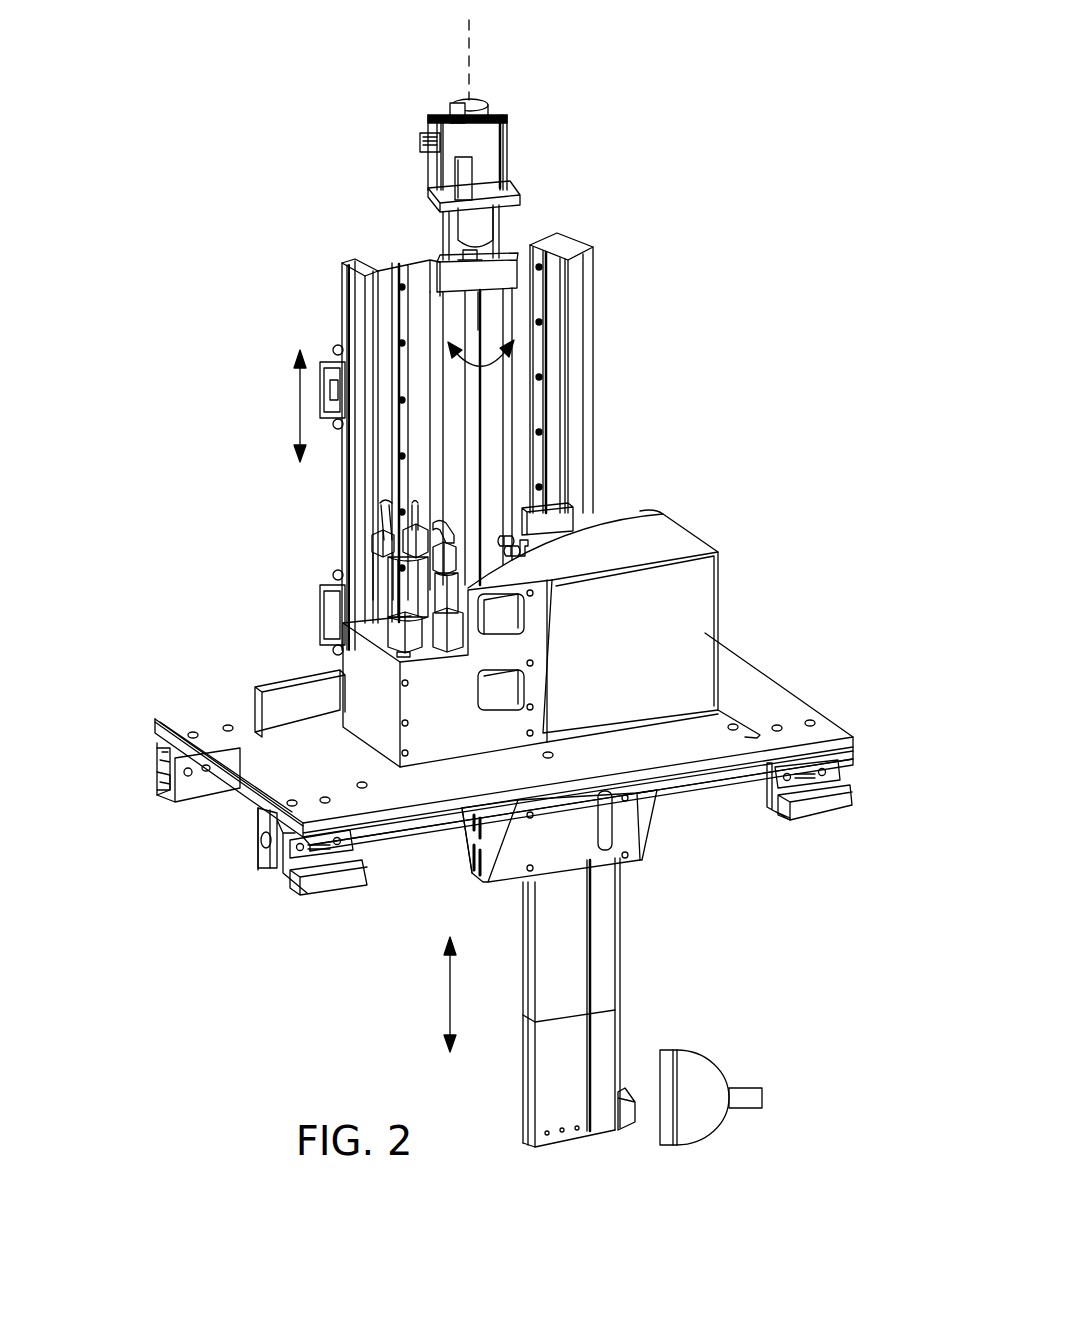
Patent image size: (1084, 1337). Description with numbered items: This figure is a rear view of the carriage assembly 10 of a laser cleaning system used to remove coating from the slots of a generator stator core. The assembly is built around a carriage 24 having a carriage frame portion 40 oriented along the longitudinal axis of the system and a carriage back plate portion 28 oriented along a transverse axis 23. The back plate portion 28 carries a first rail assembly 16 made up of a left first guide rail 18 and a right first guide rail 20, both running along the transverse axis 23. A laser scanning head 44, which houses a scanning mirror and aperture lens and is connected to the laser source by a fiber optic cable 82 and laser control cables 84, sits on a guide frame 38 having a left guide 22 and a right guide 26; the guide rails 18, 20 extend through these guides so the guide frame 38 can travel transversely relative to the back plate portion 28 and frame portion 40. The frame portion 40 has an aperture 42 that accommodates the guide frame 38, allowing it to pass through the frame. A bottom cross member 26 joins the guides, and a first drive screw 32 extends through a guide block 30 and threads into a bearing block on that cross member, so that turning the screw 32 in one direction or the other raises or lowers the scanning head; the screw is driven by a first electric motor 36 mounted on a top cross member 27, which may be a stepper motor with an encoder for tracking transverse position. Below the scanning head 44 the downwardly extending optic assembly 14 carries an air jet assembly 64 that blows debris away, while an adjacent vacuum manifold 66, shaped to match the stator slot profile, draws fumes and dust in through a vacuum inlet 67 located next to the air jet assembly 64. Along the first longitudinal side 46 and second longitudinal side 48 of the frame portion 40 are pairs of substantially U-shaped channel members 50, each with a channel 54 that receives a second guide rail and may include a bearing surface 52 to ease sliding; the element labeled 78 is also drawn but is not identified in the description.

The carriage assembly 10 is at (712, 142).
The optic assembly 14 is at (625, 935).
The first rail assembly 16 is at (383, 274).
The left first guide rail 18 is at (388, 338).
The right first guide rail 20 is at (540, 302).
The left guide 22 is at (406, 526).
The transverse axis 23 is at (465, 28).
The carriage 24 is at (176, 713).
The right guide 26 is at (567, 511).
The top cross member 27 is at (510, 190).
The carriage back plate portion 28 is at (590, 372).
The guide block 30 is at (517, 277).
The first drive screw 32 is at (476, 316).
The first electric motor 36 is at (421, 134).
The guide frame 38 is at (304, 677).
The carriage frame portion 40 is at (758, 681).
The aperture 42 is at (249, 727).
The laser scanning head 44 is at (711, 580).
The first longitudinal side 46 is at (214, 708).
The second longitudinal side 48 is at (847, 745).
The U-shaped channel member 50 is at (206, 800).
The bearing surface 52 is at (148, 787).
The channel 54 is at (161, 757).
The air jet assembly 64 is at (625, 1135).
The vacuum manifold 66 is at (710, 1072).
The vacuum inlet 67 is at (668, 1058).
The side plate 78 is at (254, 853).
The fiber optic cable 82 is at (521, 553).
The laser control cables 84 is at (396, 498).